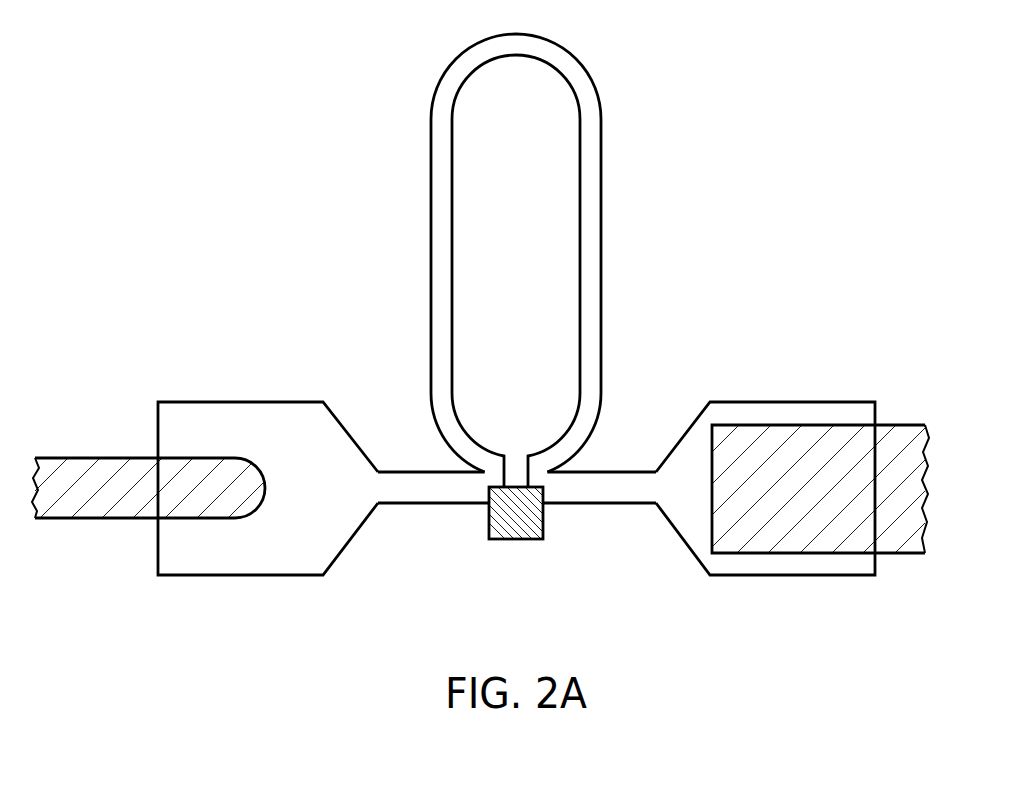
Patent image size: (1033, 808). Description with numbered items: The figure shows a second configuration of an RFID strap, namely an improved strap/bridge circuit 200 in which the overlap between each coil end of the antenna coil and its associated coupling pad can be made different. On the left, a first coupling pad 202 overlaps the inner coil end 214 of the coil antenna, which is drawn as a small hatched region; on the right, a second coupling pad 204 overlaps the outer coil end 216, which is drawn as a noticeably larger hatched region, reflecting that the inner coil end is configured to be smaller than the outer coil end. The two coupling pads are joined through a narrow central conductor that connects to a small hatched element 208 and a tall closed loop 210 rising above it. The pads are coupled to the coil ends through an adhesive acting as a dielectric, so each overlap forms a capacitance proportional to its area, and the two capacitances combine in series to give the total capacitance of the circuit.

The strap/bridge circuit 200 is at (747, 115).
The first coupling pad 202 is at (230, 402).
The second coupling pad 204 is at (772, 402).
The junction / connection node 208 is at (514, 539).
The loop portion 210 is at (603, 258).
The inner coil end 214 is at (88, 458).
The outer coil end 216 is at (902, 425).